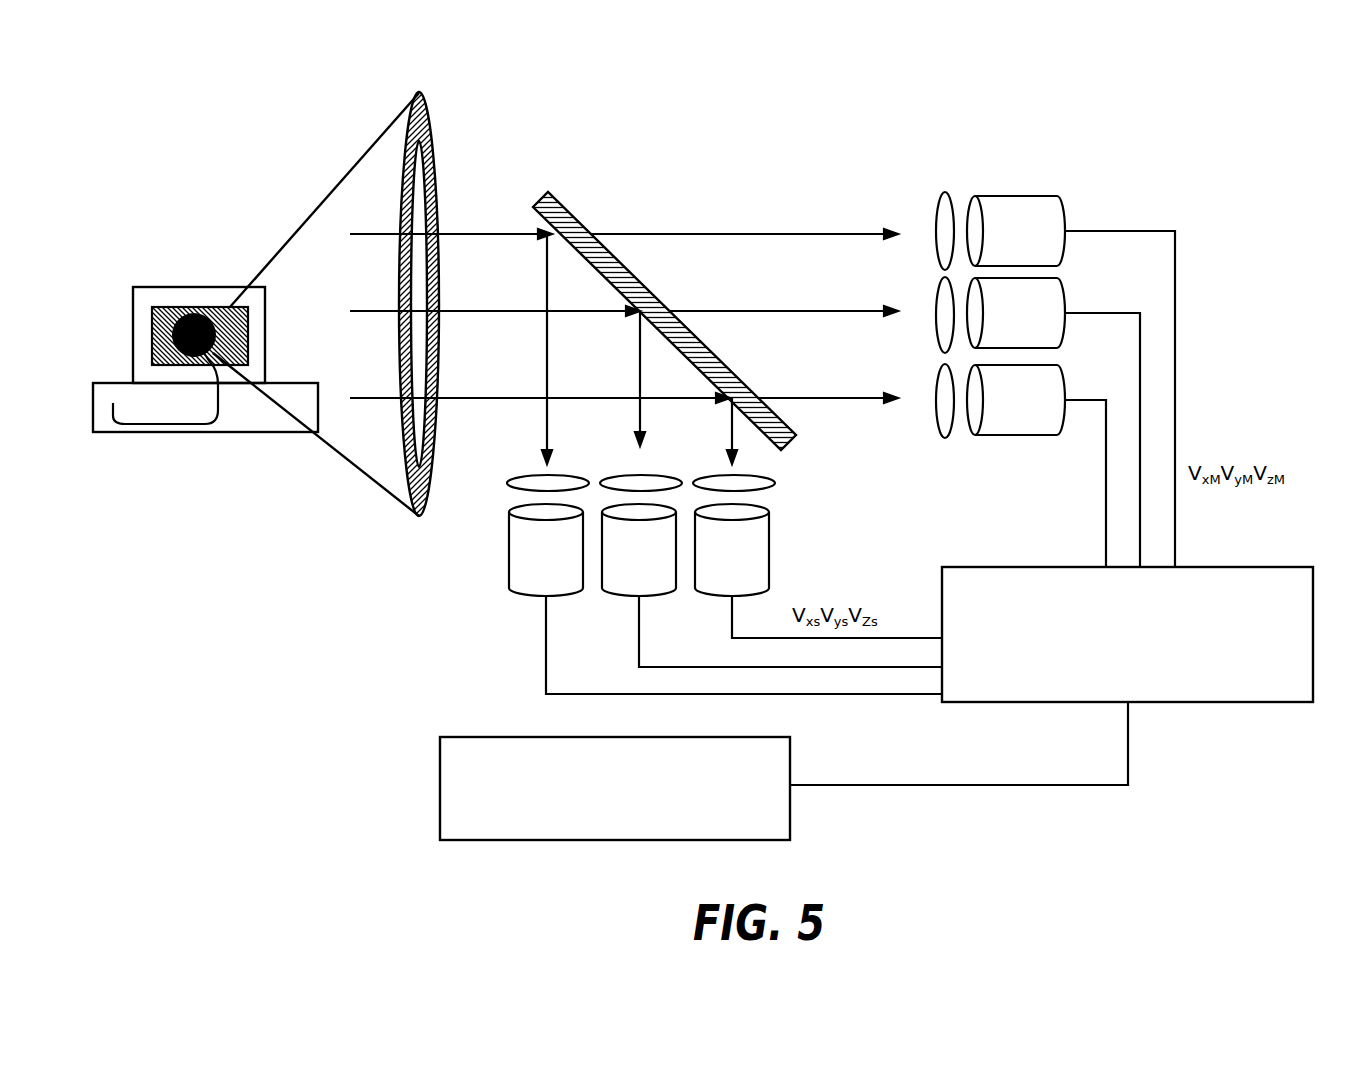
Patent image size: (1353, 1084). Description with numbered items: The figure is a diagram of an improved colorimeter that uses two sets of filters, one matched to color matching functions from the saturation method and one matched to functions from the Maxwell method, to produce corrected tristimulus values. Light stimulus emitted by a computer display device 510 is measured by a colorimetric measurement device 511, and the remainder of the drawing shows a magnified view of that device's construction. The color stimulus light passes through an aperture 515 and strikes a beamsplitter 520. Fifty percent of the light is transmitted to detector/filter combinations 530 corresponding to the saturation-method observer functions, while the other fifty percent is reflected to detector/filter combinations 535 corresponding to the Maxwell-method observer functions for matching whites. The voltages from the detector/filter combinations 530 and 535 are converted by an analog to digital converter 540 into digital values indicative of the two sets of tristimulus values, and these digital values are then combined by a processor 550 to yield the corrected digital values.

The computer display device 510 is at (133, 325).
The colorimetric measurement device 511 is at (187, 307).
The aperture 515 is at (436, 180).
The beamsplitter 520 is at (572, 215).
The detector/filter combinations 530 is at (517, 596).
The detector/filter combinations 535 is at (1022, 196).
The analog to digital converter 540 is at (1270, 567).
The processor 550 is at (440, 794).